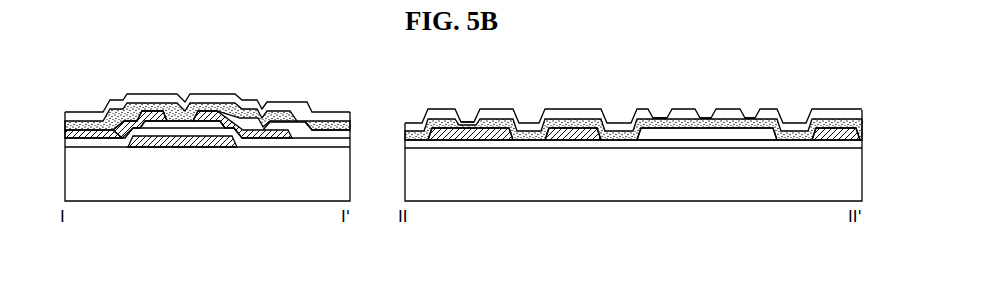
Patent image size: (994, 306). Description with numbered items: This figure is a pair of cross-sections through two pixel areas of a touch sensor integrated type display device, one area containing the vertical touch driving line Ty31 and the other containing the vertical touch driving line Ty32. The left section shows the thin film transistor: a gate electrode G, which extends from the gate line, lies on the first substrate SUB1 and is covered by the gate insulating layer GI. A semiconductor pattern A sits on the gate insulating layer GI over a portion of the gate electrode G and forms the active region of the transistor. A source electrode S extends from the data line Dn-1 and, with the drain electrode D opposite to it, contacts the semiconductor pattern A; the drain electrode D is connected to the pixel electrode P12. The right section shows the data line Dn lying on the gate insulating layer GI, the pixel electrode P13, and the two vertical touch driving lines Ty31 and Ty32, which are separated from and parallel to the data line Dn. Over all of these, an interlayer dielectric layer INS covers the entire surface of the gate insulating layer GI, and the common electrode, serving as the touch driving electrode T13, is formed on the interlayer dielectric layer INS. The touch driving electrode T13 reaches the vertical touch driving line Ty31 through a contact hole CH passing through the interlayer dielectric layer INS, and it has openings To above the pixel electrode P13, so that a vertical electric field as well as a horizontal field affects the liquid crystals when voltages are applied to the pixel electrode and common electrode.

The first substrate SUB1 is at (253, 190).
The gate insulating layer GI is at (97, 147).
The gate electrode G is at (200, 142).
The semiconductor pattern A is at (172, 126).
The data line Dn-1 is at (84, 137).
The source electrode S is at (147, 112).
The drain electrode D is at (212, 113).
The pixel electrode P12 is at (314, 133).
The interlayer dielectric layer INS is at (332, 124).
The touch driving electrode T13 is at (285, 107).
The contact hole CH is at (466, 108).
The openings To is at (662, 107).
The vertical touch driving line Ty31 is at (468, 141).
The data line Dn is at (574, 141).
The pixel electrode P13 is at (705, 131).
The vertical touch driving line Ty32 is at (834, 139).